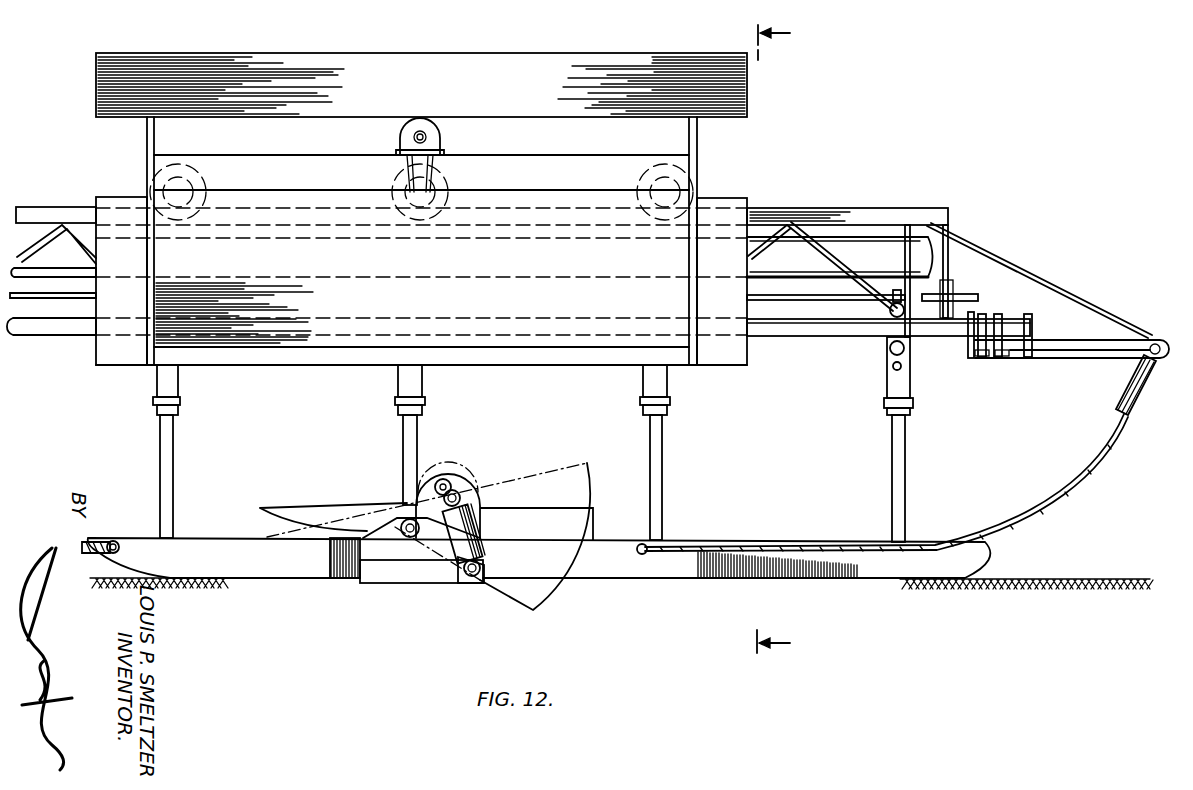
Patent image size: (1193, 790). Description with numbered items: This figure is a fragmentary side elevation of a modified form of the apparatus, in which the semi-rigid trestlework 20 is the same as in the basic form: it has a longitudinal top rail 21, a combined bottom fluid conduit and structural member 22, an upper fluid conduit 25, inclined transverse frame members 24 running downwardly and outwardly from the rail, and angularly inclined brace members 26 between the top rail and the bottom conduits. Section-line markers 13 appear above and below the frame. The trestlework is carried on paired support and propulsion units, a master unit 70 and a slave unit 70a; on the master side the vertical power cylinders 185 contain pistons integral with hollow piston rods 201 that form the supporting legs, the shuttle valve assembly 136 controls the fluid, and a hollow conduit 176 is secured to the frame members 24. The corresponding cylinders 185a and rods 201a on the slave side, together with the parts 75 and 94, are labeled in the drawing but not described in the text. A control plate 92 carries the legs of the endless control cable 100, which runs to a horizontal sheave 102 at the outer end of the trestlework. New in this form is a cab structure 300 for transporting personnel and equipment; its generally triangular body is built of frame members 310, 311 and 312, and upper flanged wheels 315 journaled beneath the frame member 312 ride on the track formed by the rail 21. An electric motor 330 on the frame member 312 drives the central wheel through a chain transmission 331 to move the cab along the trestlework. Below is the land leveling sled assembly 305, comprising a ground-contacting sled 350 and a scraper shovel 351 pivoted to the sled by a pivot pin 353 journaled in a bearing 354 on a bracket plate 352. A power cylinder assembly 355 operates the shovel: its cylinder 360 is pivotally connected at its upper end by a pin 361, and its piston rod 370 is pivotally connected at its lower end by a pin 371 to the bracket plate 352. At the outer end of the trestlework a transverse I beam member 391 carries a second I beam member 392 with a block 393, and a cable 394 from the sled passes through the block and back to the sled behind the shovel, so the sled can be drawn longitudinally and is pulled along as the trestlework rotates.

The cab structure 300 is at (453, 56).
The section line indicator 13 is at (787, 343).
The frame member 310 is at (718, 198).
The frame member 311 is at (698, 134).
The frame member 312 is at (570, 156).
The upper flanged wheels 315 is at (206, 185).
The electric motor 330 is at (440, 128).
The chain transmission 331 is at (436, 146).
The longitudinal top rail 21 is at (30, 208).
The angularly inclined brace members 26 is at (76, 226).
The semi-rigid trestlework 20 is at (888, 210).
The upper fluid conduit 25 is at (787, 247).
The inclined transverse frame members 24 is at (918, 226).
The control plate 92 is at (897, 290).
The horizontal sheave 102 is at (960, 295).
The endless control cable 100 is at (805, 300).
The pivot 75 is at (892, 314).
The combined bottom fluid conduit and structural member 22 is at (830, 337).
The transverse I beam member 391 is at (990, 358).
The second I beam member 392 is at (1090, 359).
The block 393 is at (1142, 383).
The cable 394 is at (1095, 470).
The cable anchor ring 94 is at (110, 541).
The master unit 70 is at (656, 439).
The slave unit 70a is at (417, 452).
The vertical power cylinders 185 is at (423, 382).
The hydraulic cylinder 185a is at (156, 381).
The hollow piston rods 201 is at (402, 430).
The piston rod 201a is at (174, 461).
The shuttle valve assembly 136 is at (904, 348).
The hollow conduit 176 is at (892, 367).
The land leveling sled assembly 305 is at (213, 537).
The ground-contacting sled 350 is at (294, 575).
The bracket plate 352 is at (400, 584).
The scraper shovel 351 is at (326, 510).
The bearing 354 is at (405, 518).
The pivot pin 353 is at (401, 531).
The power cylinder assembly 355 is at (470, 498).
The pin 361 is at (447, 478).
The cylinder 360 is at (471, 518).
The piston rod 370 is at (485, 563).
The pin 371 is at (472, 578).